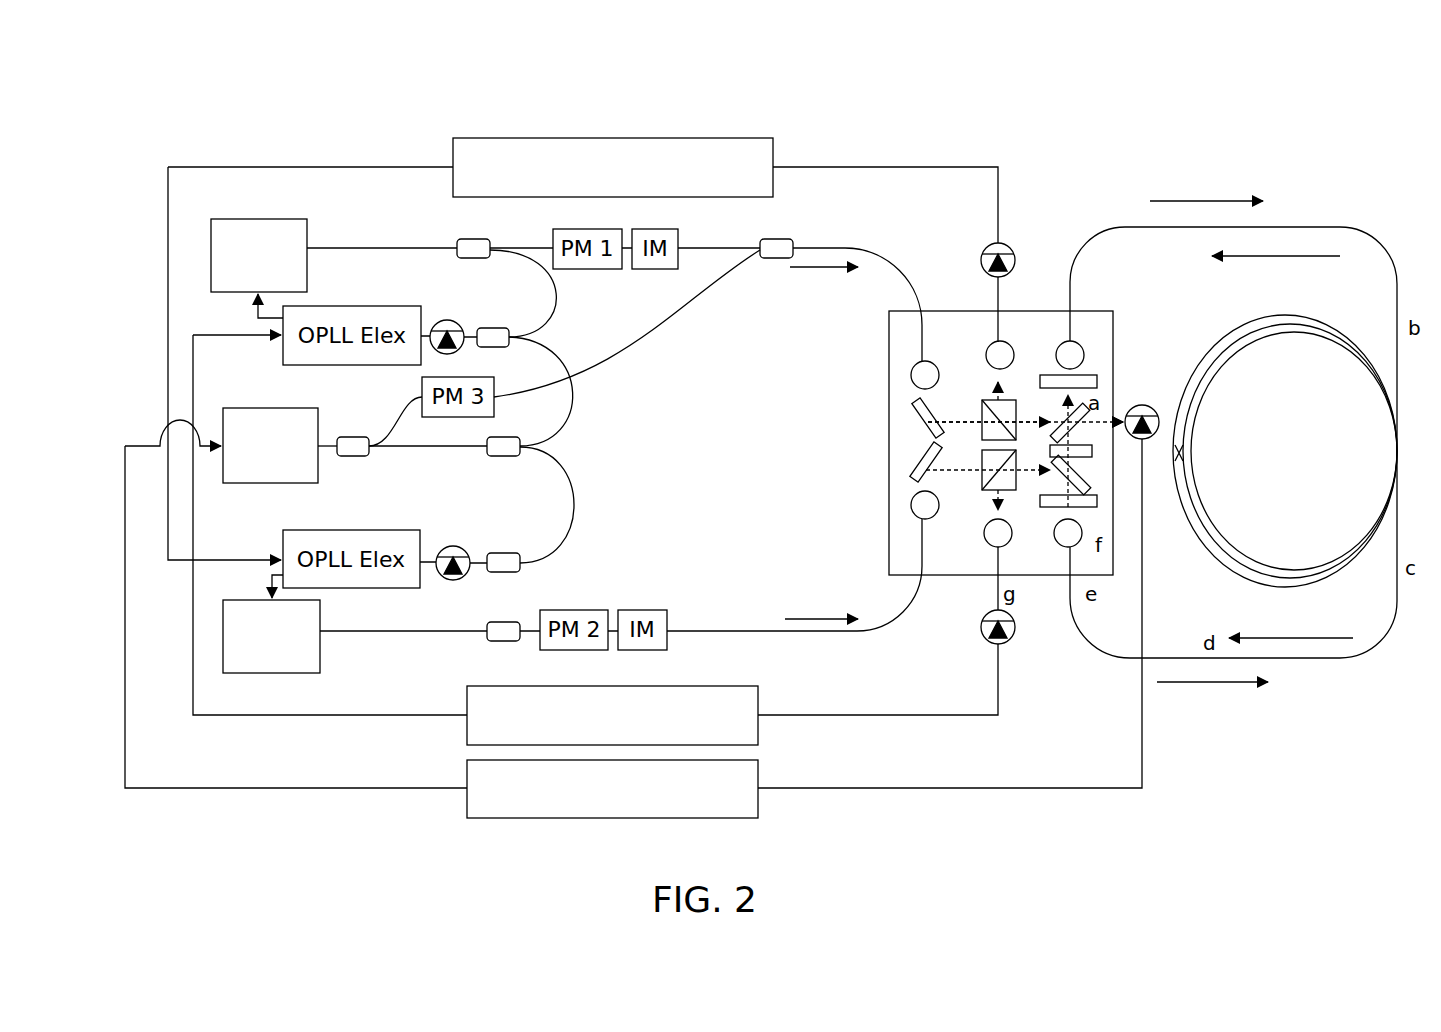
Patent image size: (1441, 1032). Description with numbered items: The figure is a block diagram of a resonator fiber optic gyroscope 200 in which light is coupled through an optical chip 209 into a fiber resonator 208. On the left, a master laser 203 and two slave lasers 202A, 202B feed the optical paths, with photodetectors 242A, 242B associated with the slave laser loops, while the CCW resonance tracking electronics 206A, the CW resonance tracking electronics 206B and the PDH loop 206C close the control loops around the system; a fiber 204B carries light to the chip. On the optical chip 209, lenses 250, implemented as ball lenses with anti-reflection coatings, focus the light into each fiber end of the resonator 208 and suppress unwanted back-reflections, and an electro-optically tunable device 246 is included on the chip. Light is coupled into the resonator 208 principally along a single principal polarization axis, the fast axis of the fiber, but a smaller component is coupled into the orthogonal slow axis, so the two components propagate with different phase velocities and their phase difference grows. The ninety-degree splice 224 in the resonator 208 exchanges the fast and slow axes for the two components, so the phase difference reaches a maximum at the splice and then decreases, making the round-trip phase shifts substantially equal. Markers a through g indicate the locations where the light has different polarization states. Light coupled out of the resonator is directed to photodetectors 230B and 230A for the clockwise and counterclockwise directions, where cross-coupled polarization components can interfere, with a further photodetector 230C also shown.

The resonator fiber optic gyroscope 200 is at (1270, 118).
The slave laser 1 202A is at (258, 219).
The slave laser 2 202B is at (320, 650).
The master laser 203 is at (252, 408).
The optical fiber 204B is at (890, 251).
The CCW resonance tracking electronics 206A is at (612, 138).
The CW resonance tracking electronics 206B is at (758, 740).
The PDH loop electronics 206C is at (758, 810).
The resonator 208 is at (1397, 453).
The optical chip 209 is at (1113, 322).
The 90 degree splice 224 is at (1181, 455).
The photodetector 230A is at (1011, 251).
The photodetector 230B is at (1009, 645).
The PDH photodetector 230C is at (1141, 405).
The OPLL photodetector 242A is at (447, 320).
The OPLL photodetector 242B is at (453, 546).
The electro-optically tunable device 246 is at (1090, 485).
The lenses 250 is at (1066, 342).